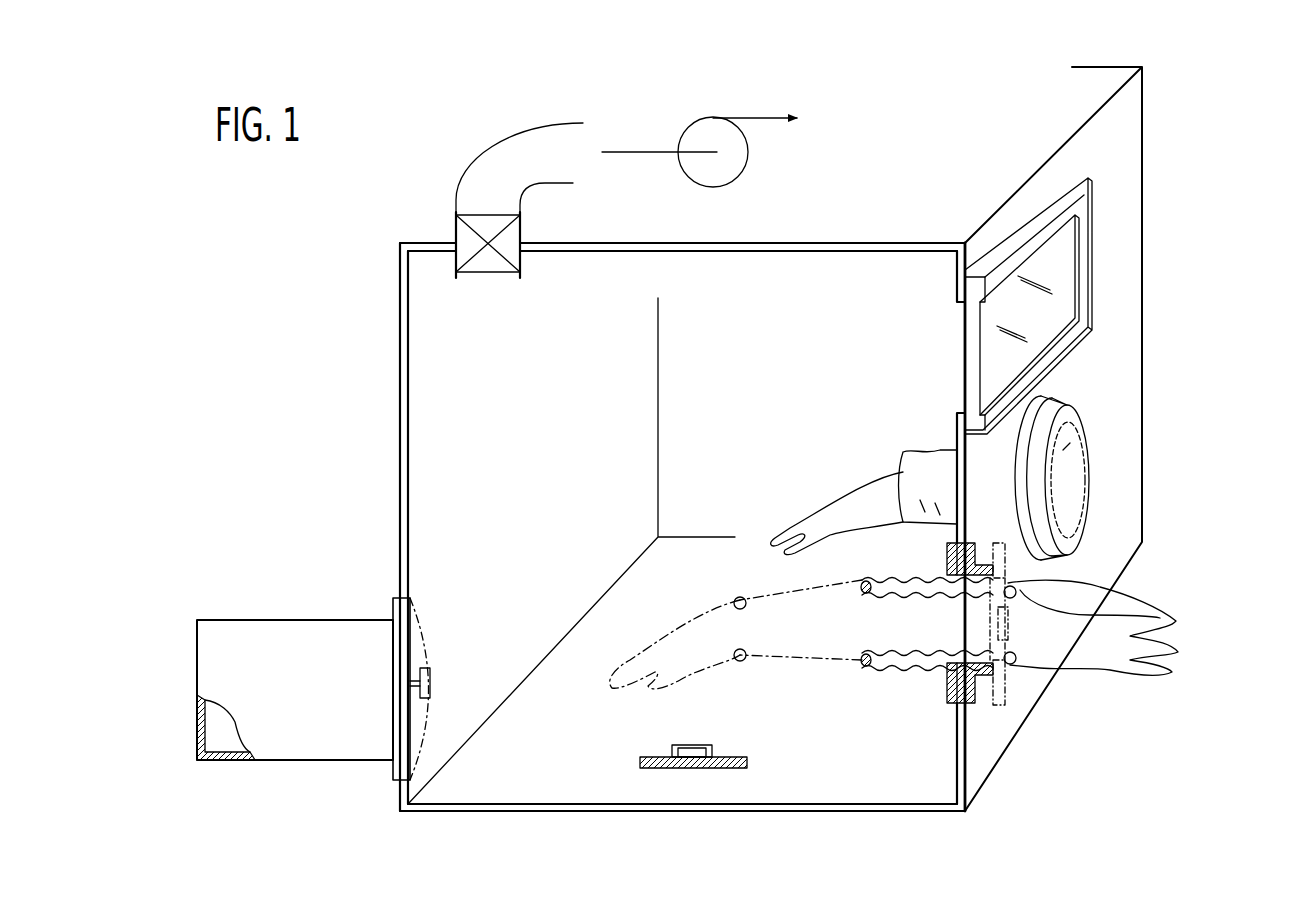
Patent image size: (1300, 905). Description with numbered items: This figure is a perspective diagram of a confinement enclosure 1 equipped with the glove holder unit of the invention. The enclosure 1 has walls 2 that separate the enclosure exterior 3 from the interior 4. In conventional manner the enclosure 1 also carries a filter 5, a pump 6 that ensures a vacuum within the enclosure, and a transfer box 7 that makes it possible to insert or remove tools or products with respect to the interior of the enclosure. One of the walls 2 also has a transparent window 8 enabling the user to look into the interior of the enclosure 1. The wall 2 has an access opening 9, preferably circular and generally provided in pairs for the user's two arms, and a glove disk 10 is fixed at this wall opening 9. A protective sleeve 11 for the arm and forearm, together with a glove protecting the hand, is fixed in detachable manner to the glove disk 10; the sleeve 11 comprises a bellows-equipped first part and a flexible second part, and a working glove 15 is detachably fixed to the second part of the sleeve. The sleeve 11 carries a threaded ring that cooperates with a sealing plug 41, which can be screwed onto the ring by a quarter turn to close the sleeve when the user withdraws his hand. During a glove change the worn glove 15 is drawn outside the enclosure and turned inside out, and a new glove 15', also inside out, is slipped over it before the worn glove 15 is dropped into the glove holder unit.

The confinement enclosure 1 is at (425, 378).
The walls 2 is at (400, 480).
The enclosure exterior 3 is at (1276, 358).
The interior 4 is at (570, 413).
The filter 5 is at (456, 233).
The pump 6 is at (733, 168).
The transfer box 7 is at (268, 626).
The transparent window 8 is at (1063, 287).
The access opening 9 is at (1070, 483).
The glove disk 10 is at (980, 705).
The protective sleeve 11 is at (902, 683).
The working glove 15 is at (1091, 646).
The new glove 15' is at (897, 624).
The sealing plug 41 is at (640, 757).